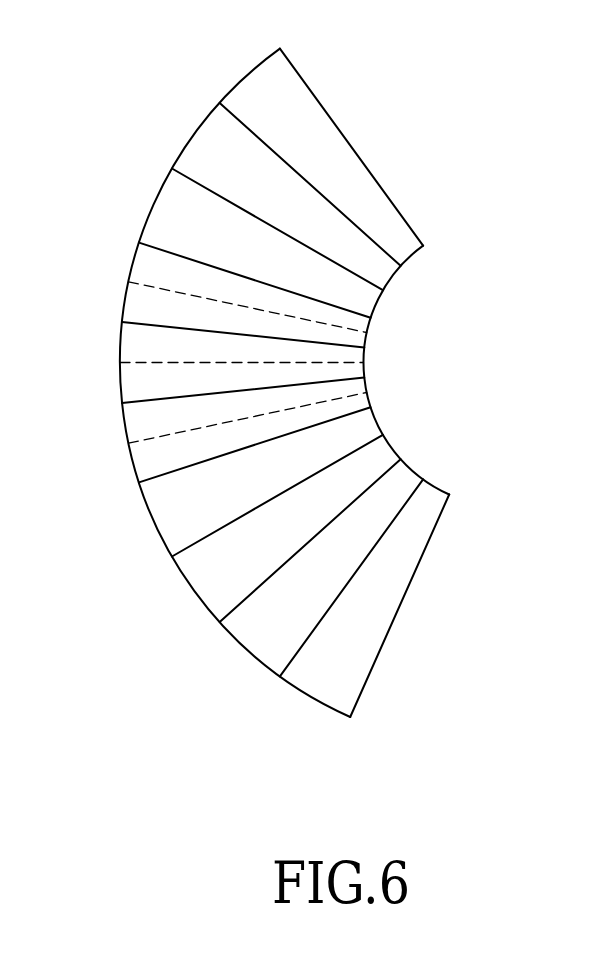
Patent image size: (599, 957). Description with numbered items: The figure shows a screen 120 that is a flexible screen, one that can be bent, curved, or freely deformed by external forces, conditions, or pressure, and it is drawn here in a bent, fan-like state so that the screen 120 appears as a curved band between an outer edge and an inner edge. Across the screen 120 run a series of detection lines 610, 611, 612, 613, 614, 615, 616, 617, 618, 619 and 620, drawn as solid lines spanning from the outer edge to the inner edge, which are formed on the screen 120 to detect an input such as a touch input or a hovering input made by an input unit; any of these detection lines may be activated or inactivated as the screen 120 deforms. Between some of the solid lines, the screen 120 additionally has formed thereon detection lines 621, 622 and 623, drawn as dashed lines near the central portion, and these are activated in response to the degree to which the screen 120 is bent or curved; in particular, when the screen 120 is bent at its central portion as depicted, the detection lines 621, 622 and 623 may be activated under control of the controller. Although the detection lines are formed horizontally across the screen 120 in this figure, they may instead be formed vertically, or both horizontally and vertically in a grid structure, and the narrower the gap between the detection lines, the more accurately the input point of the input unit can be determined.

The screen 120 is at (395, 140).
The detection line 610 is at (280, 48).
The detection line 611 is at (220, 103).
The detection line 612 is at (172, 168).
The detection line 613 is at (139, 243).
The detection line 614 is at (122, 322).
The detection line 615 is at (122, 403).
The detection line 616 is at (139, 482).
The detection line 617 is at (172, 556).
The detection line 618 is at (220, 622).
The detection line 619 is at (280, 676).
The detection line 620 is at (350, 717).
The detection line 621 is at (128, 282).
The detection line 622 is at (120, 362).
The detection line 623 is at (128, 443).